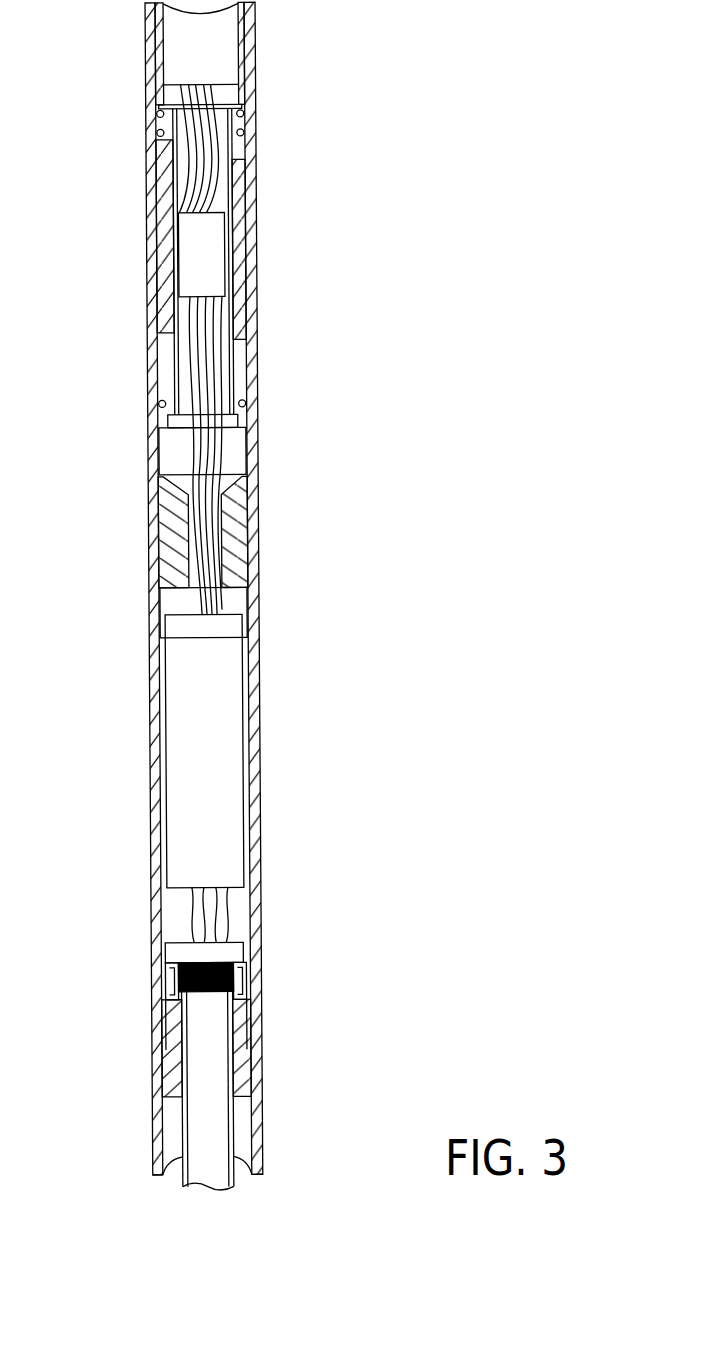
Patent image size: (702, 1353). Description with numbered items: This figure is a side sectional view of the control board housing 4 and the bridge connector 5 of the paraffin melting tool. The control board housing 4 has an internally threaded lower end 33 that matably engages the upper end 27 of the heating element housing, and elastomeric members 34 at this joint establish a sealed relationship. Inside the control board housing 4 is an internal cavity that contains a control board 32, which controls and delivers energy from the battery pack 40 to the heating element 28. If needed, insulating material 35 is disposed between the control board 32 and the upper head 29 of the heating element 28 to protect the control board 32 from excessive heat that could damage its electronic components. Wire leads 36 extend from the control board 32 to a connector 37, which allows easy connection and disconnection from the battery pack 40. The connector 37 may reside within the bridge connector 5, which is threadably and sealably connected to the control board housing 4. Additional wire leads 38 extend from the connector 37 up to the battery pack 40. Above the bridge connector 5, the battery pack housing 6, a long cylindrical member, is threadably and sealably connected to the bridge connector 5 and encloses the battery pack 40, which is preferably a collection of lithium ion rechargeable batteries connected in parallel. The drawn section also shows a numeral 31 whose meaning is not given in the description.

The control board housing 4 is at (256, 908).
The bridge connector 5 is at (250, 305).
The battery pack housing 6 is at (150, 62).
The upper end 27 is at (242, 1030).
The heating element 28 is at (208, 1078).
The upper head 29 is at (237, 952).
The fibres 31 is at (182, 918).
The control board 32 is at (236, 757).
The internally threaded lower end 33 is at (152, 1020).
The elastomeric members 34 is at (163, 978).
The insulating material 35 is at (235, 906).
The wire leads 36 is at (218, 545).
The connector 37 is at (212, 258).
The wire leads 38 is at (212, 163).
The battery pack 40 is at (220, 58).